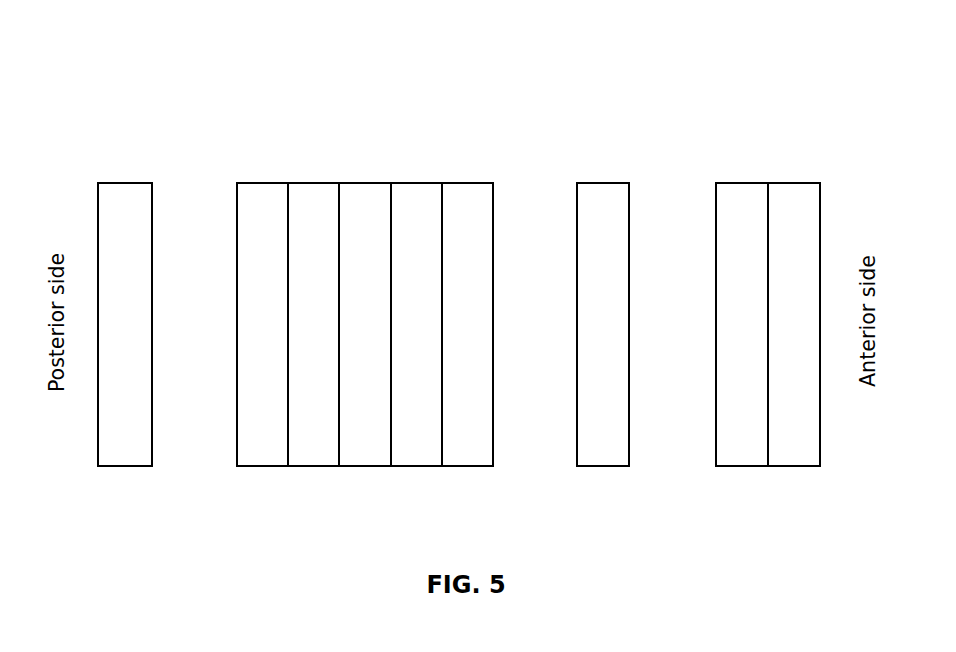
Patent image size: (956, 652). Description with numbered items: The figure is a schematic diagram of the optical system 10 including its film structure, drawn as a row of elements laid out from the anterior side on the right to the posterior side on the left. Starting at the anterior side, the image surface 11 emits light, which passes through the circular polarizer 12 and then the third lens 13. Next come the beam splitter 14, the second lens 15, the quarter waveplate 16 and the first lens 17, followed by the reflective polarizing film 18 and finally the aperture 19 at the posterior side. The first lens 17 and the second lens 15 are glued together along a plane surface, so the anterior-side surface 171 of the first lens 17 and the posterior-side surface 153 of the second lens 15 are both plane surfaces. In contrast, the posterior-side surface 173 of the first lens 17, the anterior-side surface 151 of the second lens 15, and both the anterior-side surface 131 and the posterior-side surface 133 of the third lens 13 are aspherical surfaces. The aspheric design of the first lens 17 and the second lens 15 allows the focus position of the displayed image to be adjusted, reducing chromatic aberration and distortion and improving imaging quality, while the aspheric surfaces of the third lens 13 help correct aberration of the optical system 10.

The optical system 10 is at (448, 61).
The image surface 11 is at (794, 309).
The circular polarizer 12 is at (742, 311).
The third lens 13 is at (603, 311).
The beam splitter 14 is at (467, 309).
The second lens 15 is at (416, 311).
The quarter waveplate 16 is at (365, 309).
The first lens 17 is at (313, 311).
The reflective polarizing film 18 is at (262, 310).
The aperture 19 is at (125, 309).
The anterior-side surface of the third lens 131 is at (631, 312).
The posterior-side surface of the third lens 133 is at (577, 296).
The anterior-side surface of the second lens 151 is at (443, 310).
The posterior-side surface of the second lens 153 is at (389, 322).
The anterior-side surface of the first lens 171 is at (338, 322).
The posterior-side surface of the first lens 173 is at (287, 322).